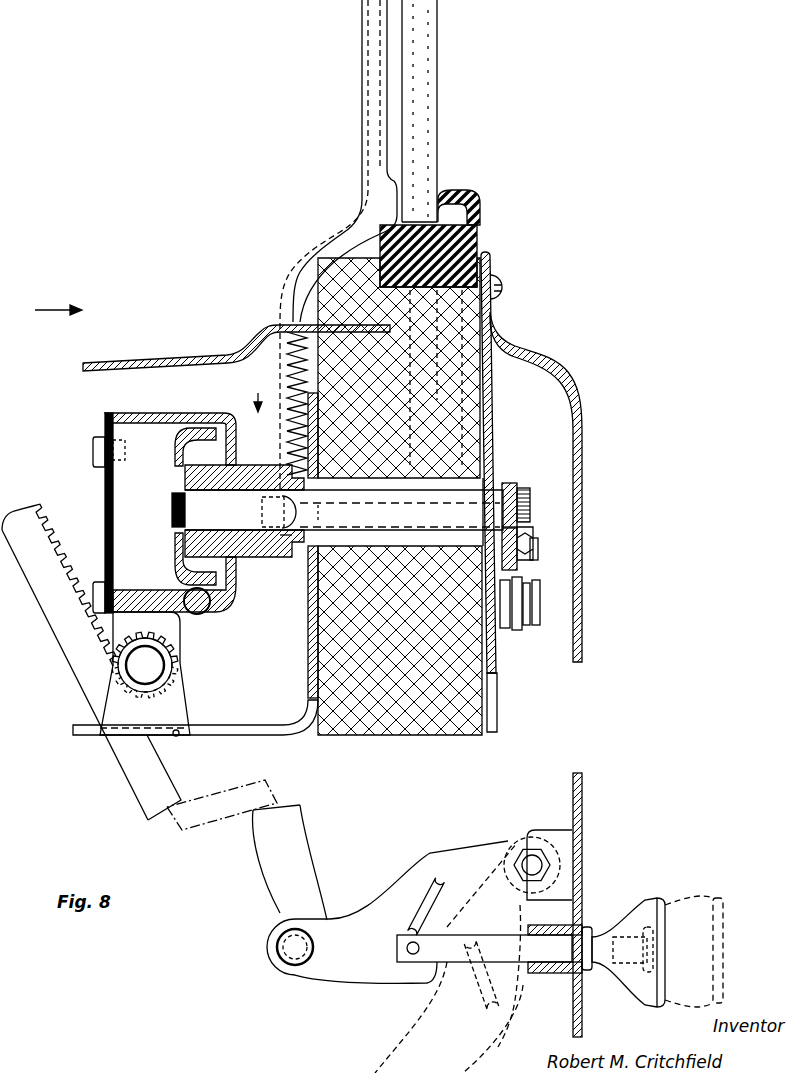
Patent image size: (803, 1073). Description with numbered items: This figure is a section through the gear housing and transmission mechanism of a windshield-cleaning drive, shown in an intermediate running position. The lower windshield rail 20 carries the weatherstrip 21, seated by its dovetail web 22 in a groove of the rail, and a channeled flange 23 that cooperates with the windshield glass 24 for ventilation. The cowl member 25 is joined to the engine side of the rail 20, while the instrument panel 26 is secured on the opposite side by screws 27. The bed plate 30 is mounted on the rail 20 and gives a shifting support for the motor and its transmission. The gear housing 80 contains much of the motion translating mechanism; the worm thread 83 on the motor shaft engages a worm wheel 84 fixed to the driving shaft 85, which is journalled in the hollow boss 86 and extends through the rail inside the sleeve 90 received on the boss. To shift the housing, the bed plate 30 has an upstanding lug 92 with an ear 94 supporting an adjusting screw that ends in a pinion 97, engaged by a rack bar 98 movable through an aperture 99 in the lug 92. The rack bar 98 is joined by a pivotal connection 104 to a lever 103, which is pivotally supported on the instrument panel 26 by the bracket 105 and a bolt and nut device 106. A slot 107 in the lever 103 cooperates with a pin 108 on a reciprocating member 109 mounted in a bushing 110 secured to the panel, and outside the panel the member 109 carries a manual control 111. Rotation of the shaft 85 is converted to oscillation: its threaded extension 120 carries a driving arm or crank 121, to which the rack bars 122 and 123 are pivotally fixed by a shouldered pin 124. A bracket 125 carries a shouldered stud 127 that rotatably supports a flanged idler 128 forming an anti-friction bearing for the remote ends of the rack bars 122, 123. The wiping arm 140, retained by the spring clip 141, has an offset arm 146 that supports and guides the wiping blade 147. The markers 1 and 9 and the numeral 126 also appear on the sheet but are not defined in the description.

The direction arrow 1 is at (44, 314).
The section direction arrow 9 is at (256, 391).
The lower rail of the windshield 20 is at (425, 735).
The weatherstrip 21 is at (481, 238).
The dovetail web 22 is at (492, 270).
The channeled flange 23 is at (454, 192).
The windshield glass 24 is at (432, 138).
The cowl member 25 is at (142, 364).
The instrument panel 26 is at (556, 368).
The screws 27 is at (503, 297).
The bed plate 30 is at (312, 634).
The gear housing 80 is at (166, 413).
The worm thread 83 is at (212, 604).
The worm wheel 84 is at (186, 446).
The driving shaft 85 is at (490, 490).
The hollow boss 86 is at (240, 470).
The sleeve 90 is at (475, 482).
The upstanding lug 92 is at (243, 725).
The ear 94 is at (176, 690).
The pinion 97 is at (145, 673).
The rack bar 98 is at (78, 672).
The aperture 99 is at (176, 738).
The link or lever 103 is at (333, 977).
The pivotal connection 104 is at (276, 947).
The bracket 105 is at (546, 832).
The bolt and nut device 106 is at (527, 850).
The slot 107 is at (425, 895).
The pin 108 is at (405, 950).
The reciprocating member 109 is at (491, 936).
The bushing 110 is at (551, 973).
The manual control 111 is at (609, 927).
The threaded extension 120 is at (528, 496).
The driving arm 121 is at (512, 484).
The rack bar 122 is at (530, 562).
The rack bar 123 is at (535, 530).
The shouldered pin 124 is at (540, 547).
The bracket 125 is at (496, 665).
The contact 126 is at (483, 555).
The shouldered stud 127 is at (545, 614).
The flanged idler 128 is at (540, 593).
The wiping arm 140 is at (283, 540).
The spring clip 141 is at (318, 511).
The offset arm 146 is at (362, 70).
The wiping blade 147 is at (392, 122).